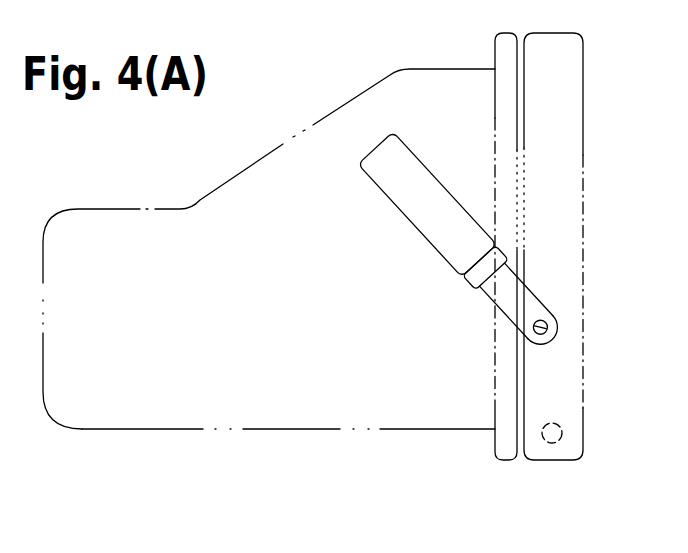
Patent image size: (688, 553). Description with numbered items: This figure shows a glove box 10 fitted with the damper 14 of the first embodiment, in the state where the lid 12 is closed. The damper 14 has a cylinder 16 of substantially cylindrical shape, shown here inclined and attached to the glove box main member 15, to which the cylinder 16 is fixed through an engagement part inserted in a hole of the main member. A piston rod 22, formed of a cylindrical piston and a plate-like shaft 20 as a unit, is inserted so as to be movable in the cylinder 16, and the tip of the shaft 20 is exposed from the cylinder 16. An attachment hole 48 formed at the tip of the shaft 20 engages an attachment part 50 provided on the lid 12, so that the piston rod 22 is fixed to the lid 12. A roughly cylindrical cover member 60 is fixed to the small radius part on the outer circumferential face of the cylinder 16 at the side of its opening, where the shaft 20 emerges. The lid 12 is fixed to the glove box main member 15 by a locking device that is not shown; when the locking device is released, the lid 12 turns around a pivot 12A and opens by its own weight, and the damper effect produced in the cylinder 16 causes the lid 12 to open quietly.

The glove box 10 is at (358, 68).
The lid 12 is at (560, 394).
The pivot 12A is at (548, 443).
The damper 14 is at (375, 224).
The glove box main member 15 is at (420, 416).
The cylinder 16 is at (427, 204).
The shaft 20 is at (529, 289).
The piston rod 22 is at (503, 312).
The attachment hole 48 is at (541, 327).
The attachment part 50 is at (546, 334).
The cover member 60 is at (486, 268).